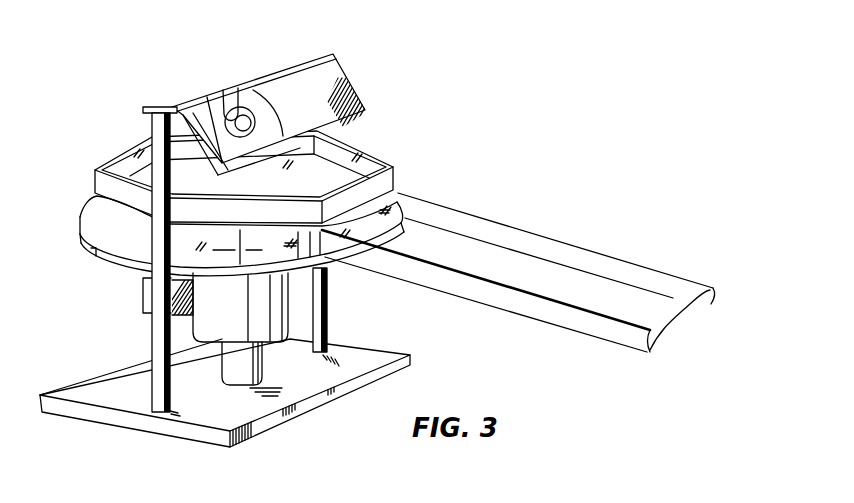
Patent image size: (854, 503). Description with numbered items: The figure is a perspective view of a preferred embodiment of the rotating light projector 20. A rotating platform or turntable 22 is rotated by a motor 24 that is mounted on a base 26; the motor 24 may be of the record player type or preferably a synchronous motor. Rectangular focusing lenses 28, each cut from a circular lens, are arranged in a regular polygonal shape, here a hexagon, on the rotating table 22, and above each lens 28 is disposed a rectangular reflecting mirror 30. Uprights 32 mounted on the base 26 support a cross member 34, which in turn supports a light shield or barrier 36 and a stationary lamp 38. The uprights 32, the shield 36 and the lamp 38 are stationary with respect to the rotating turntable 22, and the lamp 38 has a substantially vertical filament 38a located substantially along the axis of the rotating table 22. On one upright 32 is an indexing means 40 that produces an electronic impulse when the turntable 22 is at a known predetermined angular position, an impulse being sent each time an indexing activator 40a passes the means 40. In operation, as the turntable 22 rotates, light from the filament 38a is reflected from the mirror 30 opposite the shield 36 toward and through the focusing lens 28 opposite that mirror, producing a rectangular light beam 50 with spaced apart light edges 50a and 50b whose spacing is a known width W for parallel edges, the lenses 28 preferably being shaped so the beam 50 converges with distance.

The rotating light projector 20 is at (140, 84).
The turntable 22 is at (90, 222).
The motor 24 is at (258, 341).
The base 26 is at (367, 352).
The rectangular focusing lens 28 is at (397, 200).
The rectangular reflecting mirror 30 is at (140, 150).
The upright 32 is at (152, 328).
The cross member 34 is at (298, 62).
The light shield 36 is at (337, 78).
The lamp 38 is at (230, 100).
The filament 38a is at (247, 95).
The indexing means 40 is at (143, 293).
The indexing activator 40a is at (93, 250).
The rectangular light beam 50 is at (537, 245).
The light edge 50a is at (507, 305).
The light edge 50b is at (630, 266).
The width W is at (447, 298).